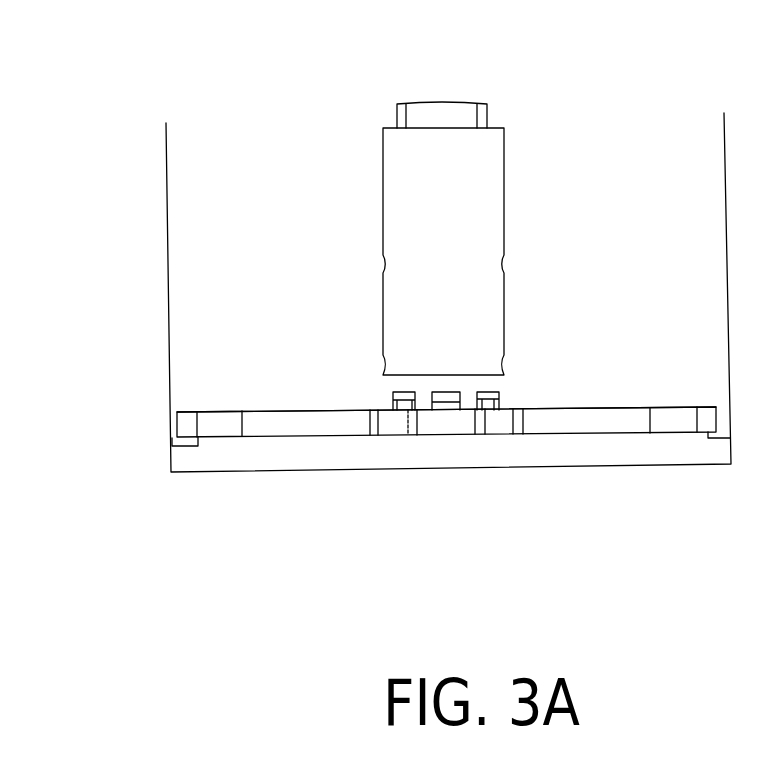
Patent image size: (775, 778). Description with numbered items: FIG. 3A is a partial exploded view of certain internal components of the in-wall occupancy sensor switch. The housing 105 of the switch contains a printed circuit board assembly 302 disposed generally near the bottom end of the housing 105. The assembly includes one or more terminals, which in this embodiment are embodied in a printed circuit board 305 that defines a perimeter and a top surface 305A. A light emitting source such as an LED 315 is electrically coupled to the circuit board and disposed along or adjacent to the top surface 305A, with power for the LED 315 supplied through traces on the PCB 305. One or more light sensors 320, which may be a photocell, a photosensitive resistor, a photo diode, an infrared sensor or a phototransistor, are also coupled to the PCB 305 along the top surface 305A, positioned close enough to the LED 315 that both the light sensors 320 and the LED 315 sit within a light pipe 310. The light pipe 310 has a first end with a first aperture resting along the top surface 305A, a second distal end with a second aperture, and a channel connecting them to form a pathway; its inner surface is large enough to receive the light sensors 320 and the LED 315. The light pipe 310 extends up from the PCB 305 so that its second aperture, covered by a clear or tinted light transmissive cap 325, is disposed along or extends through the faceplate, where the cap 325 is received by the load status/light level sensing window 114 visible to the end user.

The housing 105 is at (168, 295).
The load status/light level sensing window 114 is at (496, 199).
The printed circuit board assembly 302 is at (452, 424).
The printed circuit board 305 is at (610, 418).
The top surface 305A is at (254, 400).
The light pipe 310 is at (483, 202).
The LED 315 is at (447, 392).
The light sensors 320 is at (393, 395).
The light transmissive cap 325 is at (480, 112).